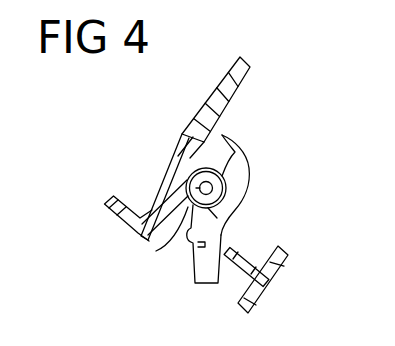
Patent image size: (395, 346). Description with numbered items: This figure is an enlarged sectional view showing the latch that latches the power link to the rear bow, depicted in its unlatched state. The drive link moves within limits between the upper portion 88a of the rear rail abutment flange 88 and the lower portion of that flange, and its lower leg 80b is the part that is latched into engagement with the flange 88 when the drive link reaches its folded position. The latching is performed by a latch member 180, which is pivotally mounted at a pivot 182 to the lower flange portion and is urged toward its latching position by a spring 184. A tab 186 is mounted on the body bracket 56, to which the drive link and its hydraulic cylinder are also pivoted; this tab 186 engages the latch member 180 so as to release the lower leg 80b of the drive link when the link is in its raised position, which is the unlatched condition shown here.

The lower leg 80b is at (240, 80).
The rear rail abutment flange 88 is at (172, 176).
The upper portion of rear rail abutment flange 88a is at (107, 205).
The pivot 182 is at (156, 251).
The latch member 180 is at (235, 152).
The spring 184 is at (223, 221).
The tab 186 is at (236, 263).
The body bracket 56 is at (265, 290).